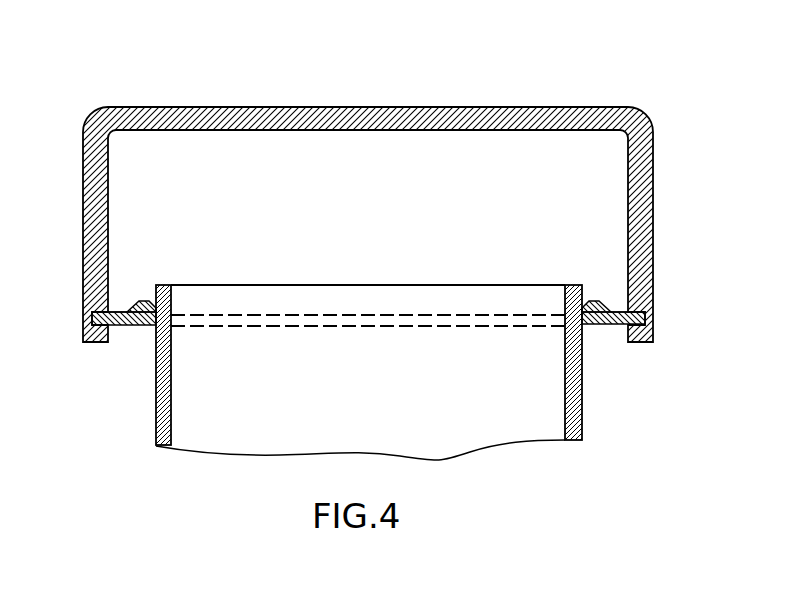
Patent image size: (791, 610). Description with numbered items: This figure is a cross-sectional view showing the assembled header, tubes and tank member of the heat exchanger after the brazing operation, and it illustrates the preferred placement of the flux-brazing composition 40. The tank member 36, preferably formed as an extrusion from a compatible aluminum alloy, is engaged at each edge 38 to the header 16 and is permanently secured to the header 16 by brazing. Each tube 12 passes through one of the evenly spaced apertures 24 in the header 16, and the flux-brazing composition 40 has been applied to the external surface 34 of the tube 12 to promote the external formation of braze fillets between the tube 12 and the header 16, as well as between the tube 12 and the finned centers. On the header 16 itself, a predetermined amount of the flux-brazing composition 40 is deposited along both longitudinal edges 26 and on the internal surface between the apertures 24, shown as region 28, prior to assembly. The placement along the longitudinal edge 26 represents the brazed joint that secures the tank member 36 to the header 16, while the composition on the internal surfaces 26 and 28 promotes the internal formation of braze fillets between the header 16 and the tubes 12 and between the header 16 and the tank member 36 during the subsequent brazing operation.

The tube 12 is at (460, 438).
The header 16 is at (612, 327).
The aperture 24 is at (145, 303).
The longitudinal edge 26 is at (118, 305).
The region between apertures 28 is at (405, 312).
The external surface 34 is at (156, 408).
The tank member 36 is at (477, 107).
The edge 38 is at (103, 342).
The flux-brazing composition 40 is at (137, 303).